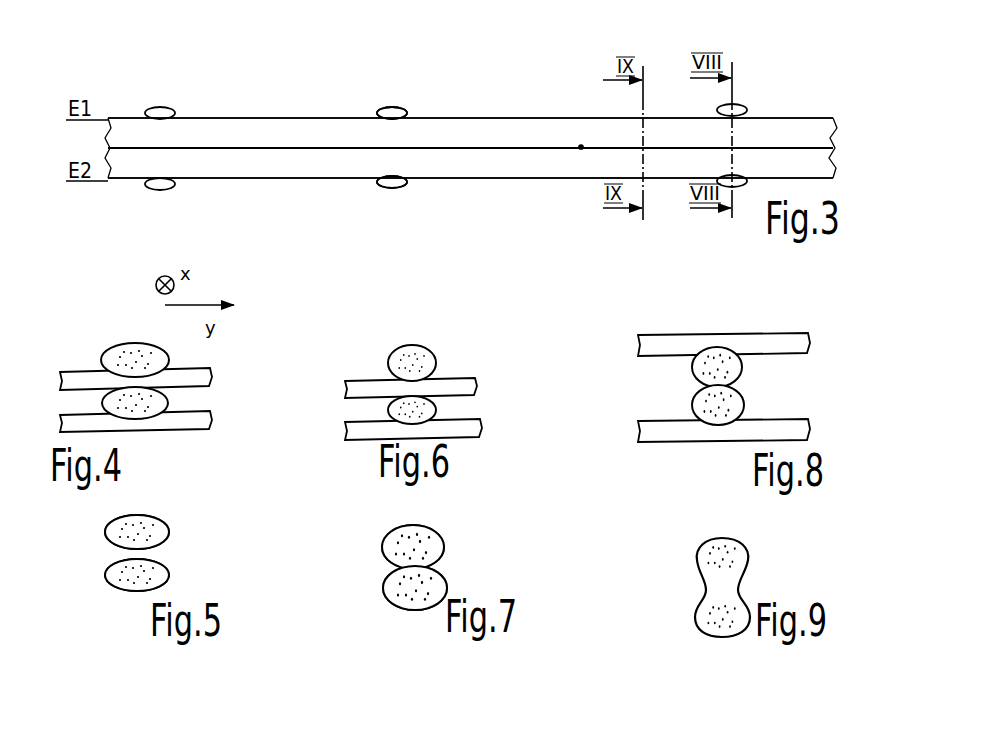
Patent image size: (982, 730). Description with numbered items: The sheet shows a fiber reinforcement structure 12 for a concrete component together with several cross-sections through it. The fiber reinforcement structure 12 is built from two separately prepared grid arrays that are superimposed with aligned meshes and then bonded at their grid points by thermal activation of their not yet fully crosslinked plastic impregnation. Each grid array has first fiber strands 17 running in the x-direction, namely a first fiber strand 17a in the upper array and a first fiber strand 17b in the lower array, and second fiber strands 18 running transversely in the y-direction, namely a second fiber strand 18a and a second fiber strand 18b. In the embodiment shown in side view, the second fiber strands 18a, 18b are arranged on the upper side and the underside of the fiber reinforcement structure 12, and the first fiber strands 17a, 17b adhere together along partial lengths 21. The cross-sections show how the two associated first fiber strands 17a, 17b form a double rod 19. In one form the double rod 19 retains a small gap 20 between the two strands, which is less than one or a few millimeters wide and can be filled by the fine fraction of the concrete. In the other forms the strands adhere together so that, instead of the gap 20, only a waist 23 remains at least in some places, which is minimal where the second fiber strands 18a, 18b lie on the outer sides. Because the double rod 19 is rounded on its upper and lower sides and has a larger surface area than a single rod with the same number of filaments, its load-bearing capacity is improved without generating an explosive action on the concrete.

In FIG. 3, the fiber reinforcement structure 12 is at (590, 80).
In FIG. 3, the first fiber strands 17 is at (541, 220).
In FIG. 3, the first fiber strand of the first grid array 17a is at (460, 135).
In FIG. 4, the first fiber strand of the first grid array 17a is at (135, 345).
In FIG. 5, the first fiber strand of the first grid array 17a is at (133, 518).
In FIG. 6, the first fiber strand of the first grid array 17a is at (397, 350).
In FIG. 7, the first fiber strand of the first grid array 17a is at (418, 540).
In FIG. 8, the first fiber strand of the first grid array 17a is at (708, 365).
In FIG. 3, the first fiber strand of the second grid array 17b is at (537, 155).
In FIG. 4, the first fiber strand of the second grid array 17b is at (112, 400).
In FIG. 5, the first fiber strand of the second grid array 17b is at (160, 570).
In FIG. 6, the first fiber strand of the second grid array 17b is at (425, 405).
In FIG. 7, the first fiber strand of the second grid array 17b is at (430, 590).
In FIG. 8, the first fiber strand of the second grid array 17b is at (698, 400).
In FIG. 3, the second fiber strands 18 is at (541, 82).
In FIG. 3, the second fiber strand of the first grid array 18a is at (396, 112).
In FIG. 4, the second fiber strand of the first grid array 18a is at (200, 377).
In FIG. 6, the second fiber strand of the first grid array 18a is at (457, 385).
In FIG. 8, the second fiber strand of the first grid array 18a is at (745, 343).
In FIG. 3, the second fiber strand of the second grid array 18b is at (398, 180).
In FIG. 4, the second fiber strand of the second grid array 18b is at (198, 421).
In FIG. 6, the second fiber strand of the second grid array 18b is at (455, 424).
In FIG. 8, the second fiber strand of the second grid array 18b is at (757, 428).
In FIG. 5, the double rod 19 is at (86, 505).
In FIG. 7, the double rod 19 is at (378, 530).
In FIG. 9, the double rod 19 is at (694, 537).
In FIG. 5, the gap 20 is at (117, 554).
In FIG. 3, the partial length 21 is at (581, 150).
In FIG. 7, the waist 23 is at (382, 568).
In FIG. 9, the waist 23 is at (690, 578).